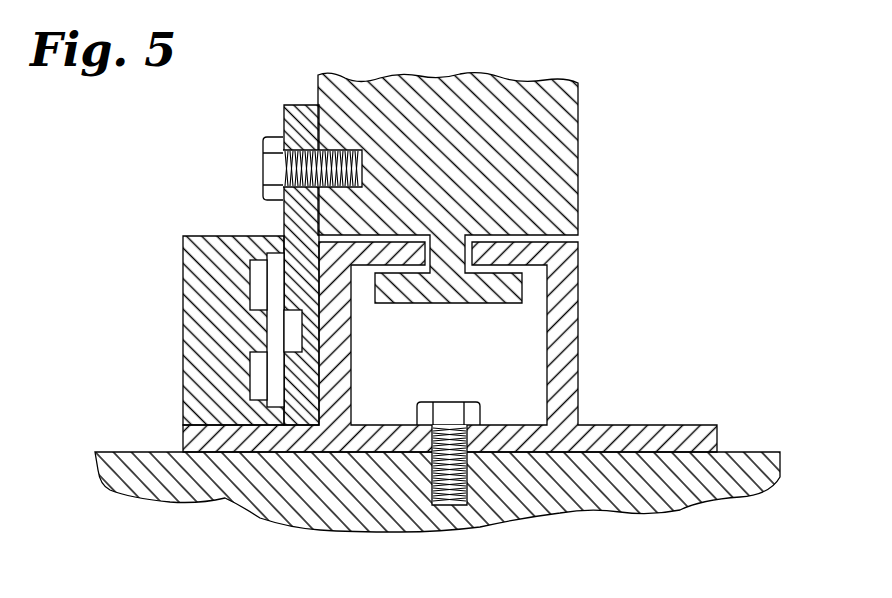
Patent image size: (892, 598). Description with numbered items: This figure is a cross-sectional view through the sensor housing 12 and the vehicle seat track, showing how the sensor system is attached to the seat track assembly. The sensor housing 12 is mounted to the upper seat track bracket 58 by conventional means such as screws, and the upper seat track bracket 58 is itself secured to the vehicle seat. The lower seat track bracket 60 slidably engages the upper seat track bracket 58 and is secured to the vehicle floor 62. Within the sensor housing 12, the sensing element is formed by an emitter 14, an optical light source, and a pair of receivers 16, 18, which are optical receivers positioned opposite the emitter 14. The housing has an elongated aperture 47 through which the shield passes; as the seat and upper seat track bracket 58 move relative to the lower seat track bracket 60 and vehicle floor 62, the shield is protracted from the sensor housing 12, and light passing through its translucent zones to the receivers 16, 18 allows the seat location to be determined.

The sensor housing 12 is at (202, 236).
The emitter 14 is at (297, 332).
The receiver 16 is at (257, 290).
The receiver 18 is at (257, 385).
The elongated aperture 47 is at (277, 258).
The upper seat track bracket 58 is at (563, 186).
The lower seat track bracket 60 is at (565, 325).
The vehicle floor 62 is at (740, 452).